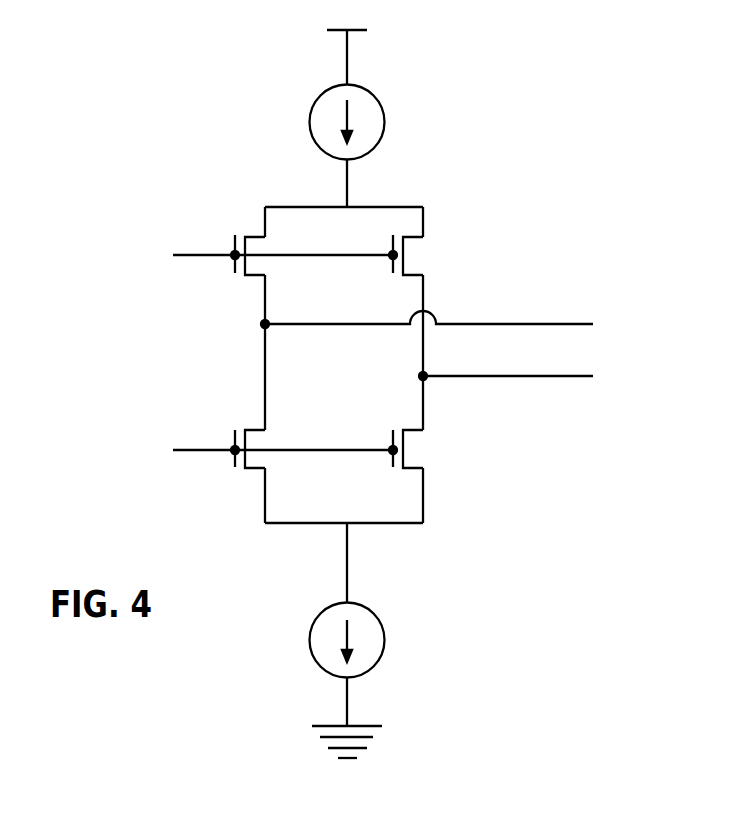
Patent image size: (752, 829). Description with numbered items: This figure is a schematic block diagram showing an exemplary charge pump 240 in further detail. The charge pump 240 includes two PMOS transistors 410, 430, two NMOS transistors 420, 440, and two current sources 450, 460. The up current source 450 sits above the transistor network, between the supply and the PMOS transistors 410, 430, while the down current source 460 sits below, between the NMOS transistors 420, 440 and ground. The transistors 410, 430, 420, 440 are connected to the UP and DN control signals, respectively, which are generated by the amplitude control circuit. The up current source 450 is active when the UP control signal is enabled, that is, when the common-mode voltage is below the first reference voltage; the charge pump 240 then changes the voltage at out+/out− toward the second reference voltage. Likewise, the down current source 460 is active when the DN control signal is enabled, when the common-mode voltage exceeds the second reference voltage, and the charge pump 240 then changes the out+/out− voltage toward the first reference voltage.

The charge pump 240 is at (530, 109).
The PMOS transistor 410 is at (281, 243).
The NMOS transistor 420 is at (281, 436).
The PMOS transistor 430 is at (436, 251).
The NMOS transistor 440 is at (436, 444).
The up current source 450 is at (309, 122).
The down current source 460 is at (309, 640).